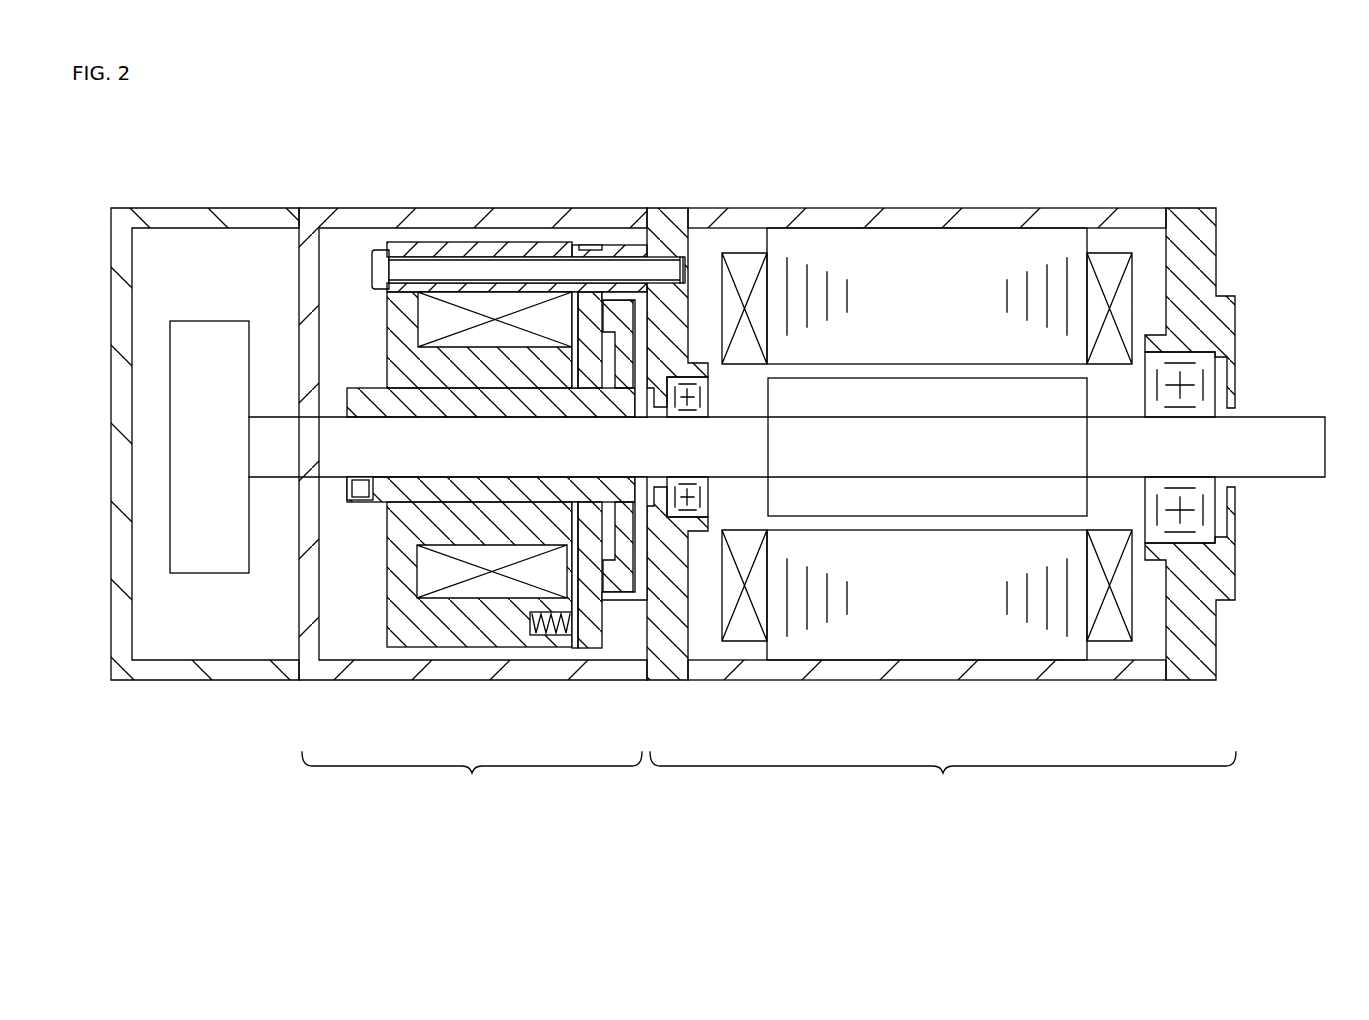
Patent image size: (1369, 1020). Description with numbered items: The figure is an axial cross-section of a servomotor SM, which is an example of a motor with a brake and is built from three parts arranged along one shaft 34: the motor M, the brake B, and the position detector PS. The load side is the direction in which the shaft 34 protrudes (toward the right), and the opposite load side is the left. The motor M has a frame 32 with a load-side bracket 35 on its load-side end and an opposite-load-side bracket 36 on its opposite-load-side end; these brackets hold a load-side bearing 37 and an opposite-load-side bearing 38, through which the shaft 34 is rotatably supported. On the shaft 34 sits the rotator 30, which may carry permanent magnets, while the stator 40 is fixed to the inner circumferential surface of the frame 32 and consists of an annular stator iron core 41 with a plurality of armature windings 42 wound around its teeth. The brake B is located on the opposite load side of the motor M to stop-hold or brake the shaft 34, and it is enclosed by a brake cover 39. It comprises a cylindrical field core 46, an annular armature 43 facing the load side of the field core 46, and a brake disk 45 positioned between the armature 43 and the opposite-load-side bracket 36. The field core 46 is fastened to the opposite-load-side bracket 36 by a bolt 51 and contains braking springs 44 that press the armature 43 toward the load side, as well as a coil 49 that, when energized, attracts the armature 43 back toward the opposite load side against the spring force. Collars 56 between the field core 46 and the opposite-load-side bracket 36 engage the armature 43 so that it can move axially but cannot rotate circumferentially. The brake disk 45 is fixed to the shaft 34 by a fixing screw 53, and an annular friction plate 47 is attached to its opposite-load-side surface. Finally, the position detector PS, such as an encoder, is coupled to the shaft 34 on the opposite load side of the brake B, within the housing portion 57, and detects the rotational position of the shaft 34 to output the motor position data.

The rotator 30 is at (1093, 508).
The frame 32 is at (905, 215).
The shaft 34 is at (1278, 478).
The load-side bracket 35 is at (1210, 248).
The opposite-load-side bracket 36 is at (657, 682).
The load-side bearing 37 is at (1212, 388).
The opposite-load-side bearing 38 is at (708, 388).
The brake cover 39 is at (410, 215).
The stator 40 is at (927, 384).
The stator iron core 41 is at (978, 265).
The armature windings 42 is at (1100, 262).
The armature 43 is at (592, 652).
The braking springs 44 is at (537, 638).
The brake disk 45 is at (627, 598).
The field core 46 is at (481, 652).
The friction plate 47 is at (612, 590).
The coil 49 is at (486, 300).
The bolt 51 is at (372, 268).
The fixing screw 53 is at (363, 483).
The collars 56 is at (623, 245).
The sensor housing 57 is at (170, 215).
The position detector PS is at (210, 330).
The servomotor SM is at (1268, 172).
The brake B is at (472, 778).
The motor M is at (943, 781).